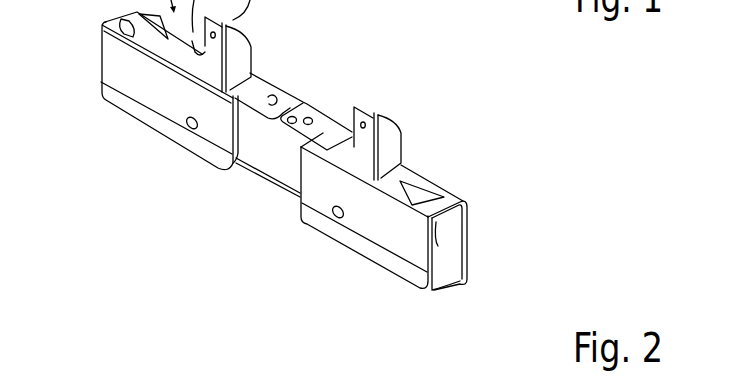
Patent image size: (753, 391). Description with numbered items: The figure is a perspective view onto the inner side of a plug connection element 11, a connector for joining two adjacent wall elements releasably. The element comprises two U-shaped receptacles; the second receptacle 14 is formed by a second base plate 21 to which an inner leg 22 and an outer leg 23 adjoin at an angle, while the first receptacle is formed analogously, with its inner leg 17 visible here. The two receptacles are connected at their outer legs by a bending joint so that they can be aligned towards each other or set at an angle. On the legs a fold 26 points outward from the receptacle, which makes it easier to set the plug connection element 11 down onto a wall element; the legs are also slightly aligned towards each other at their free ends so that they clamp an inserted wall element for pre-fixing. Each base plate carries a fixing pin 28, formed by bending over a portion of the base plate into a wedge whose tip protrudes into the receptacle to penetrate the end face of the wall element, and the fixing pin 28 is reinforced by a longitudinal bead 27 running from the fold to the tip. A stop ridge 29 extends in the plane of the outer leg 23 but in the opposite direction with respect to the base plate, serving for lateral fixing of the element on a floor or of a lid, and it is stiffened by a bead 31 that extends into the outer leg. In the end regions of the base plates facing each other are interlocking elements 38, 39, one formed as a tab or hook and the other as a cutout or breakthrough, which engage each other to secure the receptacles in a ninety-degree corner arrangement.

The plug connection element 11 is at (217, 210).
The second receptacle 14 is at (484, 180).
The inner leg 17 is at (110, 62).
The second base plate 21 is at (328, 130).
The inner leg 22 is at (380, 228).
The outer leg 23 is at (466, 245).
The fold 26 is at (143, 128).
The longitudinal bead 27 is at (118, 21).
The fixing pin 28 is at (468, 206).
The stop ridge 29 is at (238, 55).
The bead 31 is at (382, 118).
The interlocking element 38 is at (280, 78).
The interlocking element 39 is at (316, 90).